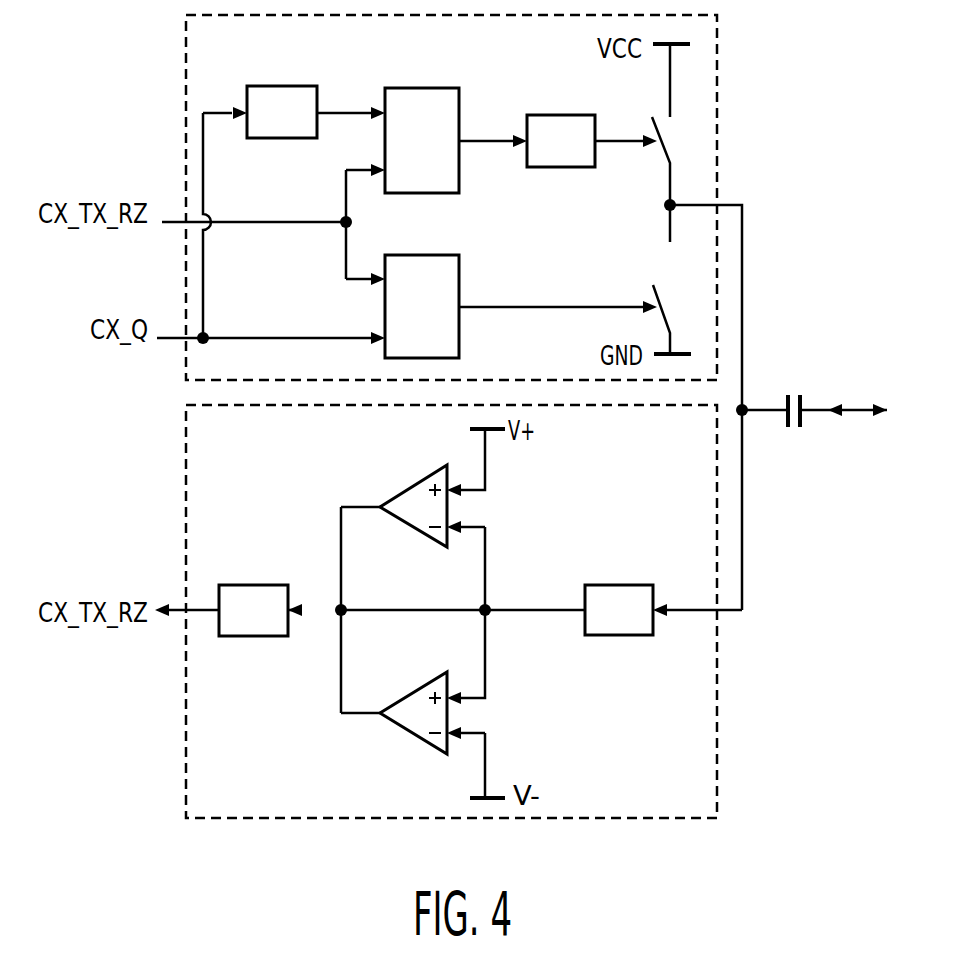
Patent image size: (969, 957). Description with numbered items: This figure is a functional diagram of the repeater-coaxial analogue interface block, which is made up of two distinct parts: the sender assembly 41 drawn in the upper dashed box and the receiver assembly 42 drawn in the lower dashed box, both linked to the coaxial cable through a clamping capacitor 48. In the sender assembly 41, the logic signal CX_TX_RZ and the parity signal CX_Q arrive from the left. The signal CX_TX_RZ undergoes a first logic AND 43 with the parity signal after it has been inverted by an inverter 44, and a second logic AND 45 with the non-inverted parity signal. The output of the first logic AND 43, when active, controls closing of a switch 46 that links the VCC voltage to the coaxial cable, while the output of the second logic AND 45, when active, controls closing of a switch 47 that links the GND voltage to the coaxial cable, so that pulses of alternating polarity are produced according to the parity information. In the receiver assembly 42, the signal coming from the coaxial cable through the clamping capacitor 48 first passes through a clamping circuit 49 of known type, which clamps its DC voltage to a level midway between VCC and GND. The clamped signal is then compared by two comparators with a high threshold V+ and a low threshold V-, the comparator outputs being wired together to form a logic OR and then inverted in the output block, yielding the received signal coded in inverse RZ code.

The sender assembly 41 is at (717, 83).
The receiver assembly 42 is at (717, 715).
The first logic AND 43 is at (415, 88).
The inverter 44 is at (257, 86).
The second logic AND 45 is at (459, 275).
The switch 46 is at (663, 153).
The switch 47 is at (652, 290).
The clamping capacitor 48 is at (793, 393).
The clamping circuit 49 is at (623, 585).